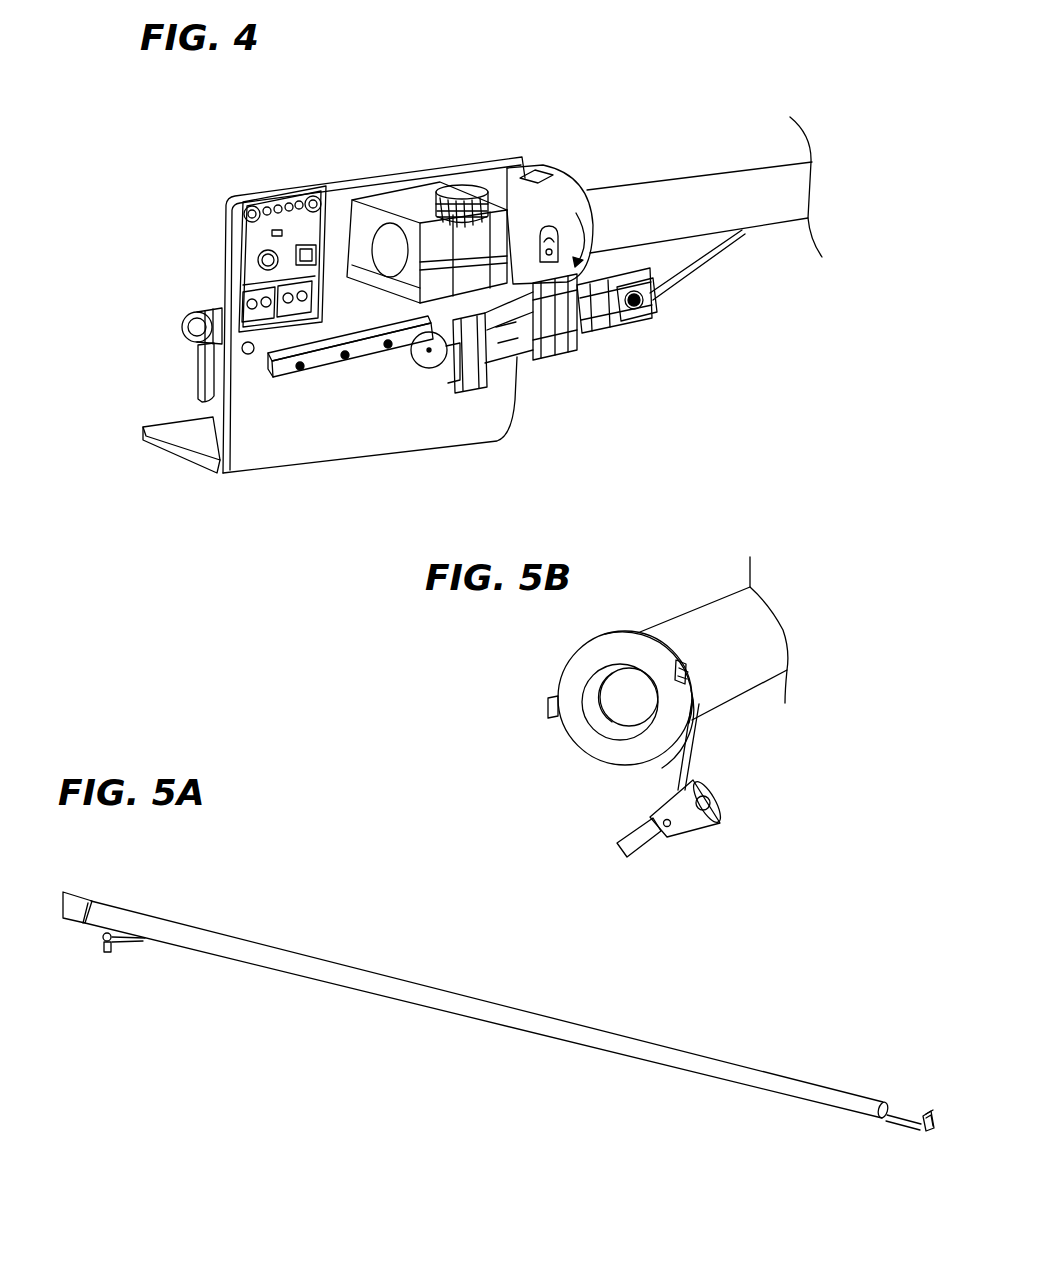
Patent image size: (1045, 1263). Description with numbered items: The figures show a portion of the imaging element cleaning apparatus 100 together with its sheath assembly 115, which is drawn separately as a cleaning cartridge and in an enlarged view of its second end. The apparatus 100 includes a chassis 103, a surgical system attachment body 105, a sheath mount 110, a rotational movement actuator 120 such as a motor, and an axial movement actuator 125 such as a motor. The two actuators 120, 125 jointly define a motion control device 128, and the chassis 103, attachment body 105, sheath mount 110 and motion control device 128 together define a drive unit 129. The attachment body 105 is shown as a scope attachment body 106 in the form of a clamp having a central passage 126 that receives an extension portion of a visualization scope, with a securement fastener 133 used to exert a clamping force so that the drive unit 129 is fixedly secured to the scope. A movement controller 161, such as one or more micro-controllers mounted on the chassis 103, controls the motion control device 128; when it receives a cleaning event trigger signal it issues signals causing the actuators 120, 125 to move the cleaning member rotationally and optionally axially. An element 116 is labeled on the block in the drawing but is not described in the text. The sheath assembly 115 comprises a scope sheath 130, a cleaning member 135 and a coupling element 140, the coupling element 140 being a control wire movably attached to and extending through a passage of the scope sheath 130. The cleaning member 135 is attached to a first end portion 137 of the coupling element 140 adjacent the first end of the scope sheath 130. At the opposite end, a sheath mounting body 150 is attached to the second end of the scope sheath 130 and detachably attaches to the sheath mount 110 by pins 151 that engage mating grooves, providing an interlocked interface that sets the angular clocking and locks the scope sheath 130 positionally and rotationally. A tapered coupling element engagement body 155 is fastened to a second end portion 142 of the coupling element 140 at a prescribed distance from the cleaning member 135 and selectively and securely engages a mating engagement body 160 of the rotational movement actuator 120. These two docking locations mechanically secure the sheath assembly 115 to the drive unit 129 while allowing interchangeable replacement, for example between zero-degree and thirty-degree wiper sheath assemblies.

In FIG. 4, the imaging element cleaning apparatus 100 is at (637, 107).
In FIG. 5B, the imaging element cleaning apparatus 100 is at (567, 640).
In FIG. 4, the chassis 103 is at (260, 440).
In FIG. 4, the surgical system attachment body 105 is at (421, 203).
In FIG. 4, the scope attachment body 106 is at (397, 203).
In FIG. 4, the sheath mount 110 is at (537, 193).
In FIG. 5A, the sheath mount 110 is at (83, 897).
In FIG. 4, the sheath assembly 115 is at (763, 167).
In FIG. 5B, the sheath assembly 115 is at (741, 597).
In FIG. 5A, the sheath assembly 115 is at (340, 917).
In FIG. 4, the aperture 116 is at (387, 256).
In FIG. 4, the rotational movement actuator 120 is at (510, 347).
In FIG. 4, the axial movement actuator 125 is at (207, 355).
In FIG. 5B, the central passage 126 is at (590, 722).
In FIG. 4, the motion control device 128 is at (195, 377).
In FIG. 4, the drive unit 129 is at (209, 433).
In FIG. 4, the scope sheath 130 is at (687, 177).
In FIG. 5B, the scope sheath 130 is at (715, 607).
In FIG. 5A, the scope sheath 130 is at (485, 1005).
In FIG. 4, the securement fastener 133 is at (463, 189).
In FIG. 5A, the cleaning member 135 is at (929, 1110).
In FIG. 5A, the first end portion of the coupling element 137 is at (911, 1126).
In FIG. 4, the coupling element 140 is at (690, 267).
In FIG. 5B, the coupling element 140 is at (693, 753).
In FIG. 5A, the coupling element 140 is at (143, 940).
In FIG. 5A, the second end portion of the coupling element 142 is at (123, 943).
In FIG. 5B, the sheath mounting body 150 is at (637, 632).
In FIG. 5B, the pins 151 is at (548, 706).
In FIG. 4, the coupling element engagement body 155 is at (658, 303).
In FIG. 5B, the coupling element engagement body 155 is at (698, 815).
In FIG. 5A, the coupling element engagement body 155 is at (102, 938).
In FIG. 4, the mating engagement body 160 is at (630, 327).
In FIG. 4, the movement controller 161 is at (303, 197).